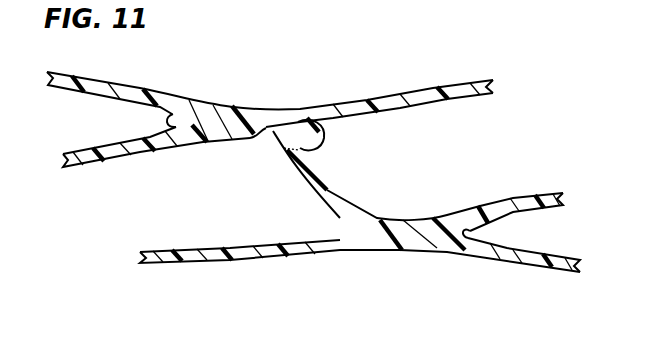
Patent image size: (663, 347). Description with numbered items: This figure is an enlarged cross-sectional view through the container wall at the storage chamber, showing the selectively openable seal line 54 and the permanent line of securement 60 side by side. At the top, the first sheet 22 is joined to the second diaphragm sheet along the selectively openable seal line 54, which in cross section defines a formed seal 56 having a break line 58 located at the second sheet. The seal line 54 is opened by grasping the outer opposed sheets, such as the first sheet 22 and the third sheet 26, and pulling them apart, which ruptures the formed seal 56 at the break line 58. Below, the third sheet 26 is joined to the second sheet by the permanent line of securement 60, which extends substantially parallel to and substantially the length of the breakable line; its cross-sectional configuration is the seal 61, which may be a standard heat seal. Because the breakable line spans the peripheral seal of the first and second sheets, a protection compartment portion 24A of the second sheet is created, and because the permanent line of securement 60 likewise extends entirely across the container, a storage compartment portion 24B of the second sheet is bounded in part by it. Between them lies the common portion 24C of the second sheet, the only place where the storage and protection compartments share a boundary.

The first sheet 22 is at (104, 81).
The protection compartment portion of the second sheet 24A is at (120, 162).
The storage compartment portion of the second sheet 24B is at (523, 199).
The common portion of the second sheet 24C is at (313, 195).
The third sheet 26 is at (220, 263).
The selectively openable seal line 54 is at (240, 107).
The formed seal 56 is at (222, 120).
The break line 58 is at (307, 150).
The permanent line of securement 60 is at (433, 250).
The seal 61 is at (386, 250).